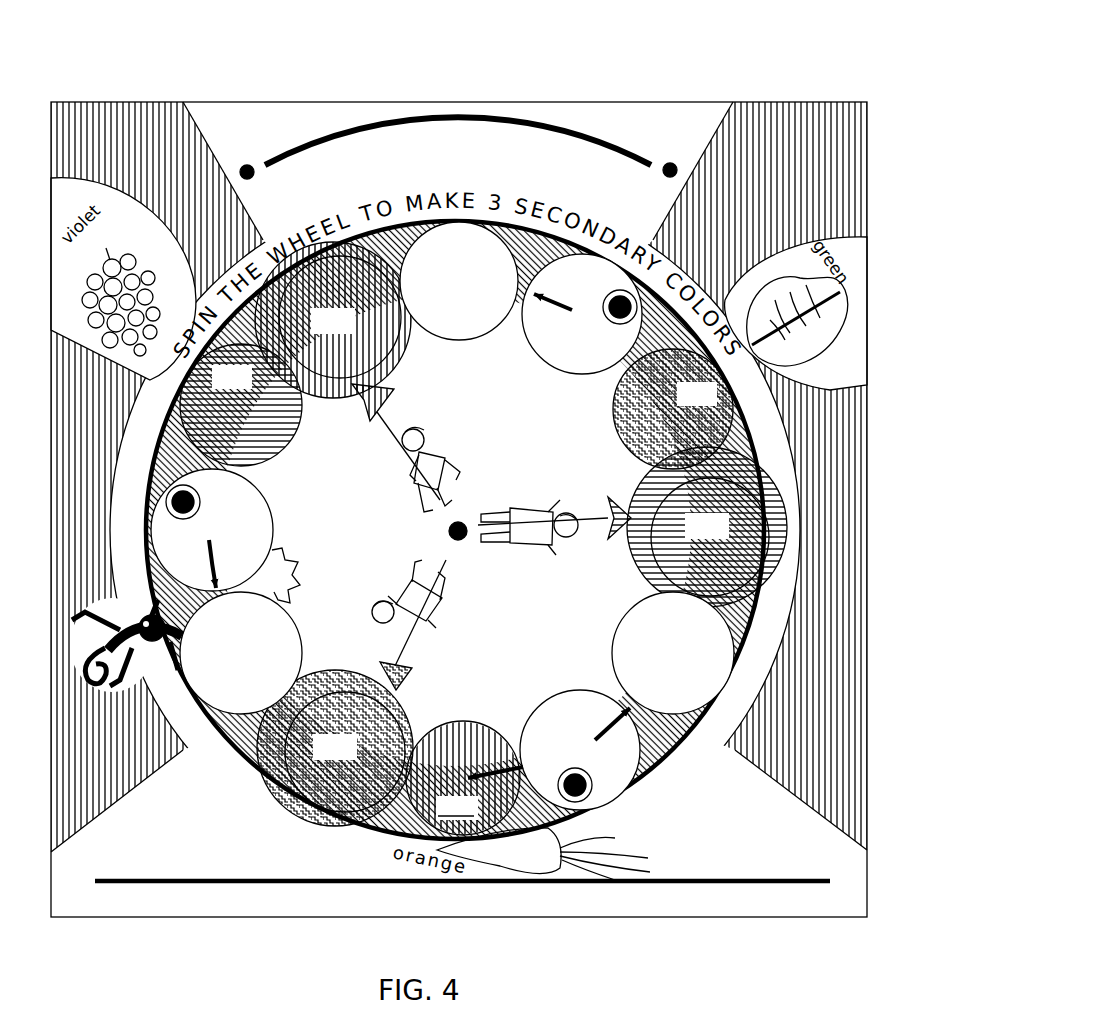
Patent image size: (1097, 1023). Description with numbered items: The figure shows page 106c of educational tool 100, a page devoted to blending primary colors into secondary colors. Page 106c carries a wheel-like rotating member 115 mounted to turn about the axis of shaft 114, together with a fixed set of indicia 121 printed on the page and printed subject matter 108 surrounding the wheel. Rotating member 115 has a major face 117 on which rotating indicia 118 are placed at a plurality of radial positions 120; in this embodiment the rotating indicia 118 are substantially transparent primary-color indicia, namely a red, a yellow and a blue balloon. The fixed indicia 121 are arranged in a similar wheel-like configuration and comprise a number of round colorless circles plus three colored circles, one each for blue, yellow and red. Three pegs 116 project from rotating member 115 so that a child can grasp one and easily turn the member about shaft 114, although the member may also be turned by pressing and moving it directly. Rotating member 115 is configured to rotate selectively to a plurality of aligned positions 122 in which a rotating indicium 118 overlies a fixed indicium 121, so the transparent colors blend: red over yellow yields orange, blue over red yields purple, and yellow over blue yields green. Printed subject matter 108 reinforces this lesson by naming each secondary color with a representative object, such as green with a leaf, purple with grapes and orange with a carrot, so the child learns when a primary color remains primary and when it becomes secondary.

The educational tool 100 is at (776, 50).
The page 106c is at (800, 870).
The printed subject matter 108 is at (644, 130).
The shaft 114 is at (449, 529).
The rotating member 115 is at (499, 596).
The peg 116 is at (604, 300).
The major face 117 is at (499, 632).
The rotating indicia 118 is at (315, 331).
The radial positions 120 is at (292, 574).
The fixed indicia 121 is at (440, 290).
The aligned positions 122 is at (470, 744).